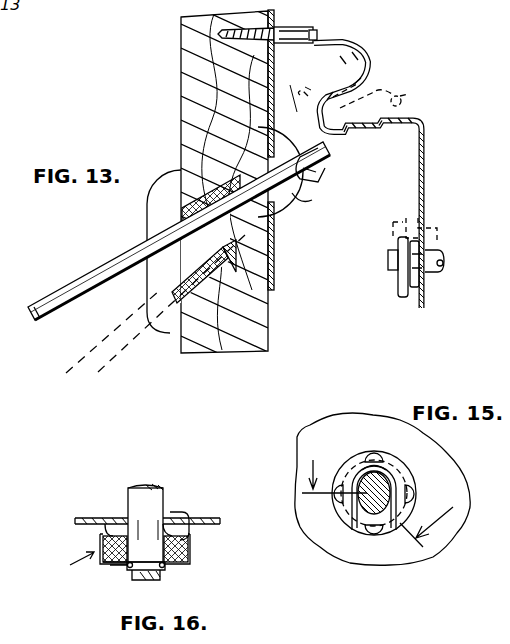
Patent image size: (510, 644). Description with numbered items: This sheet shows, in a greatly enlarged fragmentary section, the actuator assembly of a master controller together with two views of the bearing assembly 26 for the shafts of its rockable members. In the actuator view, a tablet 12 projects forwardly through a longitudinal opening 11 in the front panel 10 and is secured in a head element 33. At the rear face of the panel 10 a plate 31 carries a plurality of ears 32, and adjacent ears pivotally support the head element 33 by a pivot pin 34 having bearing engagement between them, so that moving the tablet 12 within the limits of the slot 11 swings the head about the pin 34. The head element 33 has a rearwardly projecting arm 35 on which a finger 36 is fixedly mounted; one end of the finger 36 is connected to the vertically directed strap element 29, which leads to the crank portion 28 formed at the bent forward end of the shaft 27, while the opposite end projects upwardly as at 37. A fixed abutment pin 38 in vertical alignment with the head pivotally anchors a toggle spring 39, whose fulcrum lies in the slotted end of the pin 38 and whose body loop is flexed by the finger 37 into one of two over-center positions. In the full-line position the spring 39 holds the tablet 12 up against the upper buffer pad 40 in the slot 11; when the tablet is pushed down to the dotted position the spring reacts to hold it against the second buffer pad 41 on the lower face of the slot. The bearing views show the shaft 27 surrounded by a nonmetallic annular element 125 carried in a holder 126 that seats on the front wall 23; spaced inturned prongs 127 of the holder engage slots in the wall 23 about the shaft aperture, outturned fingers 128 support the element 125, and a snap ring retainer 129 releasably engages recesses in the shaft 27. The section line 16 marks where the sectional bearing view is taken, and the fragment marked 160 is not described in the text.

In FIG. 13, the front panel 10 is at (181, 76).
In FIG. 13, the longitudinal opening 11 is at (272, 228).
In FIG. 13, the tablet 12 is at (78, 298).
In FIG. 13, the crank portion 28 is at (442, 262).
In FIG. 13, the strap element 29 is at (425, 152).
In FIG. 13, the plate 31 is at (275, 265).
In FIG. 13, the ears 32 is at (298, 200).
In FIG. 13, the head element 33 is at (330, 152).
In FIG. 13, the pivot pin 34 is at (308, 180).
In FIG. 13, the rearwardly projecting arm 35 is at (372, 135).
In FIG. 13, the finger 36 is at (410, 117).
In FIG. 13, the upwardly projecting end of finger 37 is at (349, 97).
In FIG. 13, the abutment pin 38 is at (300, 28).
In FIG. 13, the toggle spring 39 is at (362, 54).
In FIG. 13, the upper buffer pad 40 is at (165, 216).
In FIG. 13, the second buffer pad 41 is at (152, 330).
In FIG. 13, the element 160 is at (67, 7).
In FIG. 15, the front wall 23 is at (445, 533).
In FIG. 16, the front wall 23 is at (92, 518).
In FIG. 16, the bearing assembly 26 is at (71, 564).
In FIG. 15, the shaft 27 is at (390, 490).
In FIG. 16, the shaft 27 is at (135, 488).
In FIG. 15, the nonmetallic annular element 125 is at (390, 484).
In FIG. 16, the nonmetallic annular element 125 is at (185, 557).
In FIG. 16, the holder 126 is at (188, 537).
In FIG. 15, the inturned prongs 127 is at (352, 430).
In FIG. 16, the inturned prongs 127 is at (178, 515).
In FIG. 15, the outturned fingers 128 is at (417, 492).
In FIG. 16, the outturned fingers 128 is at (103, 567).
In FIG. 15, the snap ring retainer 129 is at (360, 455).
In FIG. 16, the snap ring retainer 129 is at (163, 570).
In FIG. 15, the section line 16 is at (386, 494).